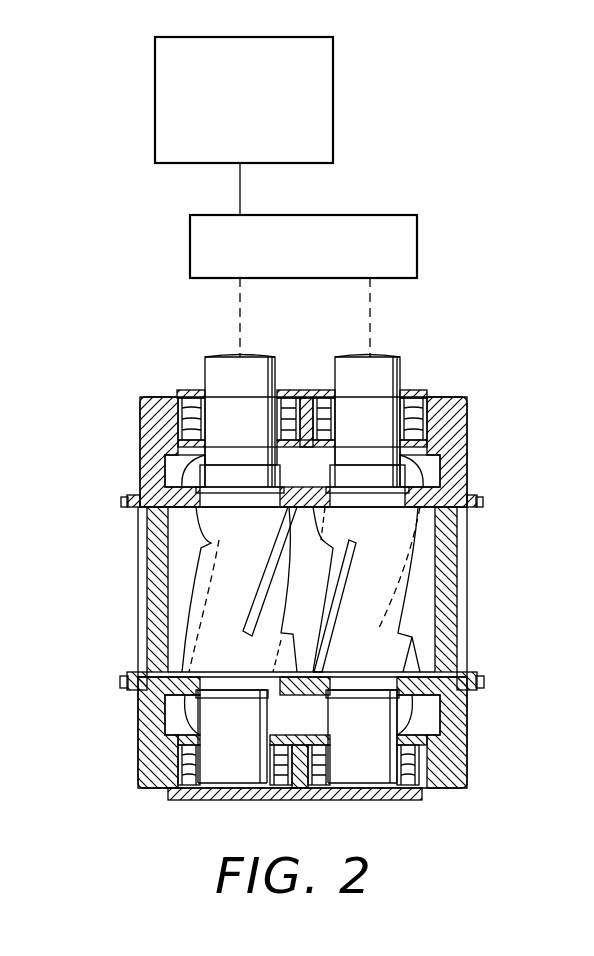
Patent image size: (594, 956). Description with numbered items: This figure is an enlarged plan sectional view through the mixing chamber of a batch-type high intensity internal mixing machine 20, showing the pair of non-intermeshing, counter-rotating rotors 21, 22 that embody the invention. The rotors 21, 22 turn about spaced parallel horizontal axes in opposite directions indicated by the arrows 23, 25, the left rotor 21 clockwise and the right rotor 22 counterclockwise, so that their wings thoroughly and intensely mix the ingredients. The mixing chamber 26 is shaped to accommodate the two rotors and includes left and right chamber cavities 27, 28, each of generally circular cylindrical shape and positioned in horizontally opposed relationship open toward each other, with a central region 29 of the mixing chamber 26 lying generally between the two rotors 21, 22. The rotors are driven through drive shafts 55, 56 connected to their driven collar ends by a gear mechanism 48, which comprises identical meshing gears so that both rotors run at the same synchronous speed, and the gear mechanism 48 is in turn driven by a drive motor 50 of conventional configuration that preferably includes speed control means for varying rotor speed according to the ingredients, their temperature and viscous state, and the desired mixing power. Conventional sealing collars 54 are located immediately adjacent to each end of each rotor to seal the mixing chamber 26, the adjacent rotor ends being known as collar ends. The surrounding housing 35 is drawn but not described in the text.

The high intensity internal mixing machine 20 is at (126, 343).
The left rotor 21 is at (192, 572).
The right rotor 22 is at (413, 580).
The rotation direction arrow of left rotor 23 is at (285, 468).
The rotation direction arrow of right rotor 25 is at (317, 476).
The mixing chamber 26 is at (312, 567).
The left chamber cavity 27 is at (178, 603).
The right chamber cavity 28 is at (413, 610).
The central region 29 is at (302, 588).
The housing 35 is at (478, 410).
The gear mechanism 48 is at (417, 248).
The drive motor 50 is at (333, 117).
The sealing collars 54 is at (218, 482).
The drive shaft 55 is at (215, 378).
The drive shaft 56 is at (385, 375).